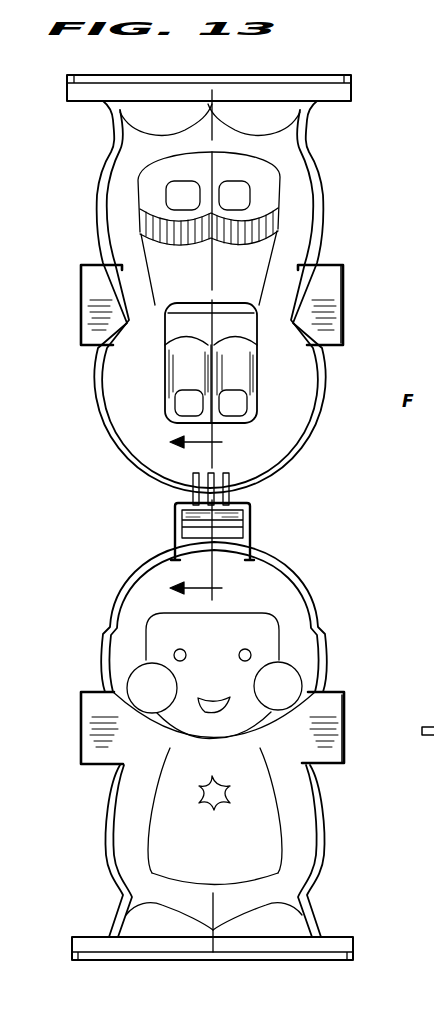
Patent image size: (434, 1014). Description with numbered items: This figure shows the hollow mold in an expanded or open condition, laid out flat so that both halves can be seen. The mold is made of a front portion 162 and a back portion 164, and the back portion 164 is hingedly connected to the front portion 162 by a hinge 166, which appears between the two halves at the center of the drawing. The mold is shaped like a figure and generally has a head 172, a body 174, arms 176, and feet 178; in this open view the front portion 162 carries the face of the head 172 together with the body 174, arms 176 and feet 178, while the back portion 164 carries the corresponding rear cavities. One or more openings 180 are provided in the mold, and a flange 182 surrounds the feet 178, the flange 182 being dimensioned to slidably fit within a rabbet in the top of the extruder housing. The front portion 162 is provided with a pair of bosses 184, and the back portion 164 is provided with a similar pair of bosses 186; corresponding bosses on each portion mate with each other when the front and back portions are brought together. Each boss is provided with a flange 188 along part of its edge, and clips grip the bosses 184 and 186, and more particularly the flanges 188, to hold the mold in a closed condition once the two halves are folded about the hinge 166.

The front portion 162 is at (147, 561).
The back portion 164 is at (103, 408).
The hinge 166 is at (234, 520).
The head 172 is at (270, 670).
The body 174 is at (160, 822).
The arms 176 is at (128, 858).
The feet 178 is at (287, 917).
The openings 180 is at (177, 397).
The flange 182 is at (377, 937).
The bosses 184 is at (82, 690).
The bosses 186 is at (82, 342).
The flange 188 is at (343, 280).